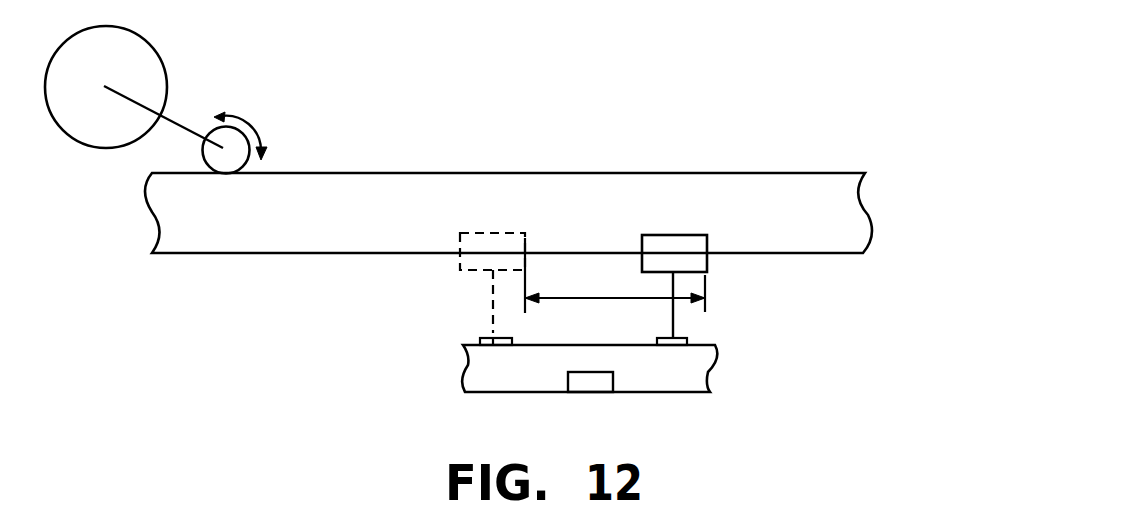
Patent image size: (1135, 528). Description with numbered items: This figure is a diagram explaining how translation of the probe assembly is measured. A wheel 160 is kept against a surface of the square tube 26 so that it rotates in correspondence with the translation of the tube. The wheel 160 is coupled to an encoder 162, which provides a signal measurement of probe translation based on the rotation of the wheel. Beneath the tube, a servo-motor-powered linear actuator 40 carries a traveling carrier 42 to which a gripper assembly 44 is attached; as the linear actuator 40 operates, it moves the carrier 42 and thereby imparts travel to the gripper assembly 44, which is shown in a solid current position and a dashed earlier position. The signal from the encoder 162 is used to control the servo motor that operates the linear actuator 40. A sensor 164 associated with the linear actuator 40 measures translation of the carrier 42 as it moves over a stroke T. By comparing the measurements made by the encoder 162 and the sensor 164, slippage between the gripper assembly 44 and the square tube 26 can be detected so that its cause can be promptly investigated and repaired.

The square tube 26 is at (795, 173).
The encoder 162 is at (166, 68).
The wheel 160 is at (250, 163).
The gripper assembly 44 is at (512, 233).
The stroke T is at (573, 297).
The traveling carrier 42 is at (512, 337).
The linear actuator 40 is at (710, 370).
The sensor 164 is at (597, 383).